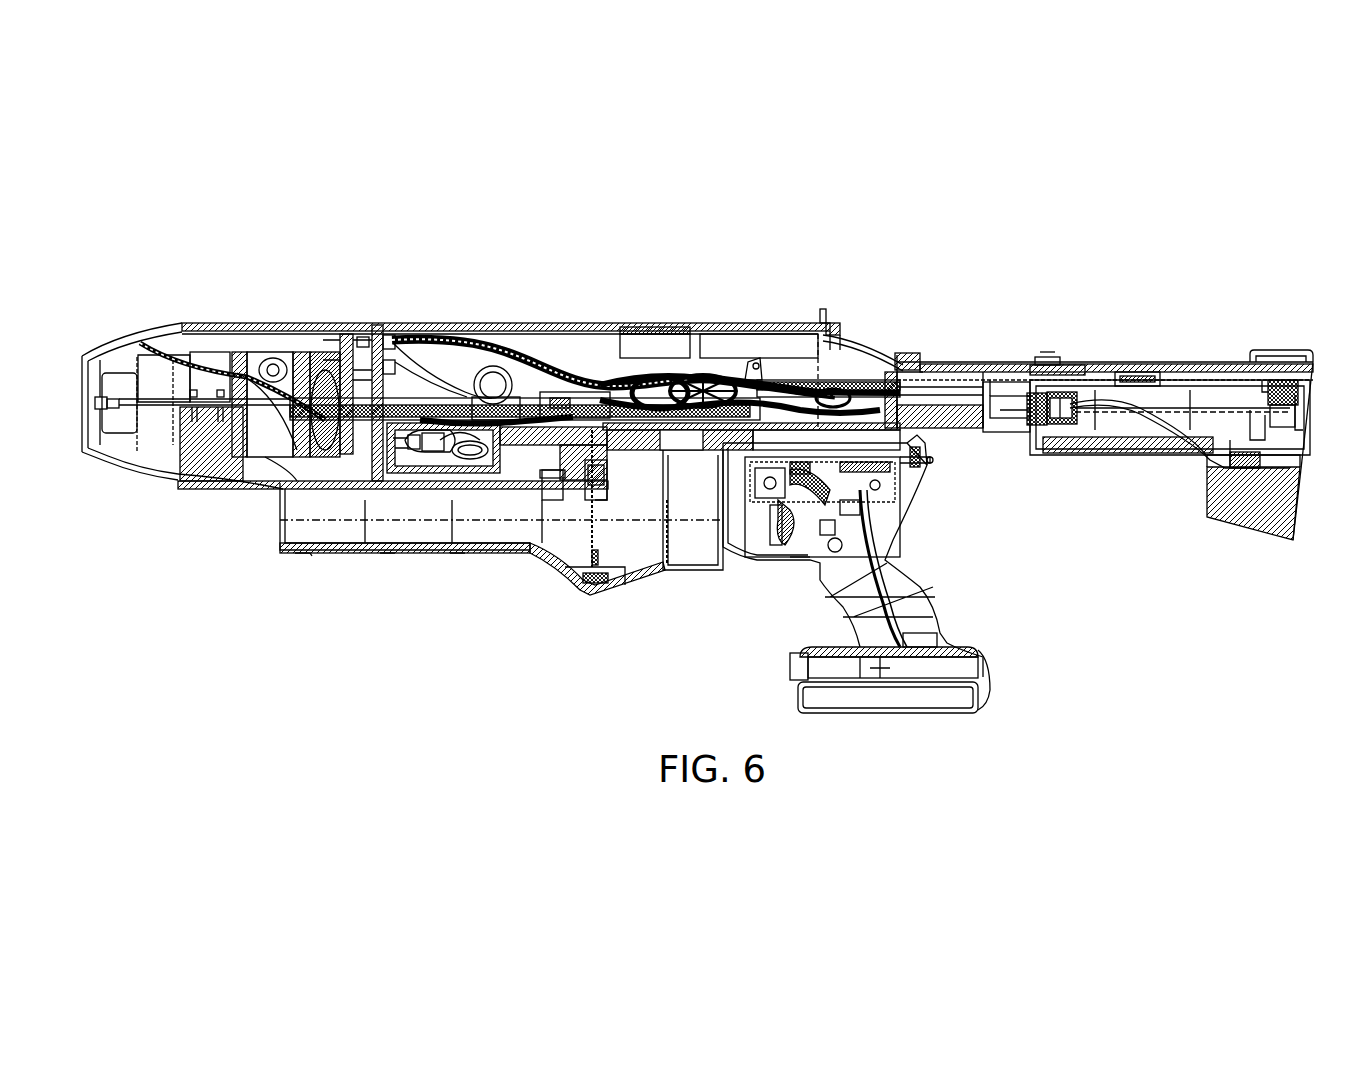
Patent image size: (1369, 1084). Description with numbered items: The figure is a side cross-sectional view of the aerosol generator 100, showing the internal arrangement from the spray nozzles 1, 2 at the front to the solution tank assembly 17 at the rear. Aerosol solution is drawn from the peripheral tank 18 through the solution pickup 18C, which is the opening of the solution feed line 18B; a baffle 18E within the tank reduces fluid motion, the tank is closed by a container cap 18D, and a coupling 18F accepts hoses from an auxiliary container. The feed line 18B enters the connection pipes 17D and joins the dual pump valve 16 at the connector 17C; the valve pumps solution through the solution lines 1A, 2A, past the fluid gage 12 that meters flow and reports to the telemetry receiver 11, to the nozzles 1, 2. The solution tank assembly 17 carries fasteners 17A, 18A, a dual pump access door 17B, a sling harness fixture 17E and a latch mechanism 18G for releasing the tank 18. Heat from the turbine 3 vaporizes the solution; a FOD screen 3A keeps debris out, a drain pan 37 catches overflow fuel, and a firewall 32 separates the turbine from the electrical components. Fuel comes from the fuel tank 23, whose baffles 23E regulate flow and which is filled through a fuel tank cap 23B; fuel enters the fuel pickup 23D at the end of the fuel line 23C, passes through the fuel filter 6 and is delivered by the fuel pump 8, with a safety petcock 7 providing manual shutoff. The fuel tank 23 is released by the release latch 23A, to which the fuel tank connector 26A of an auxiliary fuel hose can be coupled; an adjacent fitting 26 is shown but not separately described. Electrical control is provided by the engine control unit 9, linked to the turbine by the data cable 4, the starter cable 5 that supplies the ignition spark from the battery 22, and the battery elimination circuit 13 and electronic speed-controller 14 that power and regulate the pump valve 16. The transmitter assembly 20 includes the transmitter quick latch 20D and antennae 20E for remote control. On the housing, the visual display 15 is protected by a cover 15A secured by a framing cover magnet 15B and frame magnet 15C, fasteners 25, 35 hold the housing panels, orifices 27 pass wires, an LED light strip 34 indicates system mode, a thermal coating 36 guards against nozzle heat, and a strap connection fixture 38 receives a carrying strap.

The aerosol generator 100 is at (148, 283).
The spray nozzle 1 is at (115, 393).
The solution line 1A is at (140, 397).
The spray nozzle 2 is at (118, 403).
The solution line 2A is at (112, 412).
The turbine 3 is at (243, 355).
The FOD screen 3A is at (315, 370).
The data cable 4 is at (397, 330).
The starter cable 5 is at (492, 340).
The fuel filter 6 is at (400, 490).
The safety petcock 7 is at (452, 490).
The fuel pump 8 is at (530, 340).
The engine control unit 9 is at (585, 340).
The telemetry receiver 11 is at (668, 340).
The fluid gage 12 is at (700, 372).
The battery elimination circuit 13 is at (740, 378).
The electronic speed-controller 14 is at (757, 360).
The visual display 15 is at (803, 322).
The cover 15A is at (812, 318).
The framing cover magnet 15B is at (838, 327).
The frame magnet 15C is at (847, 333).
The dual pump valve 16 is at (935, 360).
The solution tank assembly 17 is at (1213, 360).
The fastener 17A is at (1047, 363).
The dual pump access door 17B is at (958, 362).
The connector 17C is at (1023, 407).
The connection pipes 17D is at (997, 390).
The sling harness fixture 17E is at (1280, 352).
The peripheral tank 18 is at (1093, 376).
The fastener 18A is at (1047, 415).
The solution feed line 18B is at (1152, 413).
The solution pickup 18C is at (1300, 473).
The container cap 18D is at (1137, 377).
The baffle 18E is at (1107, 420).
The coupling 18F is at (1297, 423).
The latch mechanism 18G is at (1293, 380).
The transmitter assembly 20 is at (905, 560).
The transmitter quick latch 20D is at (920, 433).
The antennae 20E is at (928, 464).
The battery 22 is at (990, 680).
The fuel tank 23 is at (290, 553).
The release latch 23A is at (533, 543).
The fuel tank cap 23B is at (690, 455).
The fuel line 23C is at (593, 490).
The fuel pickup 23D is at (593, 597).
The baffles 23E is at (667, 563).
The fastener 25 is at (325, 330).
The upper cover 26 is at (840, 362).
The fuel tank connector 26A is at (550, 492).
The orifices 27 is at (403, 320).
The firewall 32 is at (387, 478).
The LED light strip 34 is at (163, 395).
The fastener 35 is at (350, 345).
The thermal coating 36 is at (97, 460).
The drain pan 37 is at (187, 490).
The strap connection fixture 38 is at (270, 440).